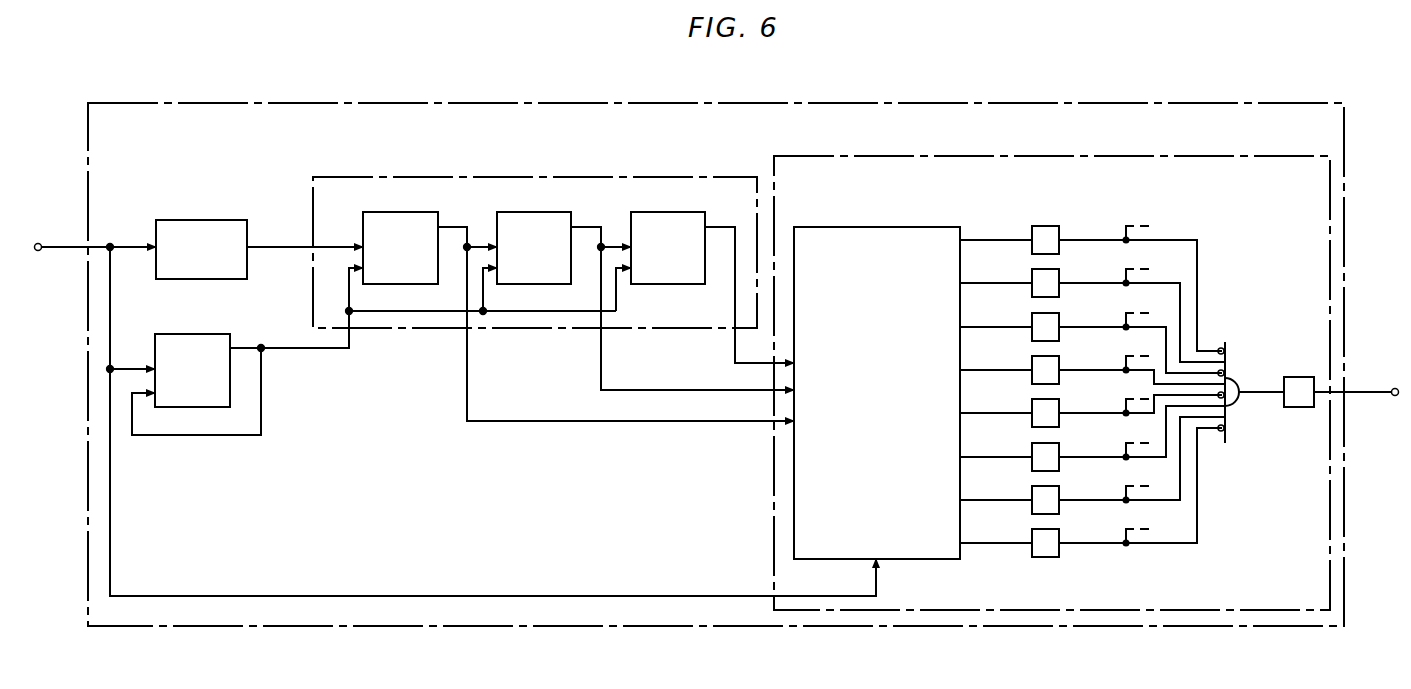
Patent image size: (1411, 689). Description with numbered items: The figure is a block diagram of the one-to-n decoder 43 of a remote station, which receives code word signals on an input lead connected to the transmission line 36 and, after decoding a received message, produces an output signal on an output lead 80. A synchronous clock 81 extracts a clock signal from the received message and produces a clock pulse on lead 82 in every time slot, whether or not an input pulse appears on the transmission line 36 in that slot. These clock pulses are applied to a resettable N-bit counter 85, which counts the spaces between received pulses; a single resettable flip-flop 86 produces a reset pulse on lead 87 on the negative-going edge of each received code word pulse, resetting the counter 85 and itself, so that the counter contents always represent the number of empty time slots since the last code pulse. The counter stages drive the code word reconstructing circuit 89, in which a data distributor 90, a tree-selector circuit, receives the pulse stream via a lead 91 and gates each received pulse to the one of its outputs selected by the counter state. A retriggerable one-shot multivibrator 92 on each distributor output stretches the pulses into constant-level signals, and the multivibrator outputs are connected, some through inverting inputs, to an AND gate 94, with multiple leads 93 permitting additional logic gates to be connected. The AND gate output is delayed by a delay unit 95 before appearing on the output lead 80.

The decoder 43 is at (907, 103).
The transmission line 36 is at (60, 247).
The synchronous clock 81 is at (191, 220).
The lead 82 is at (279, 247).
The resettable N bit counter 85 is at (540, 177).
The resettable flip-flop 86 is at (188, 334).
The lead 87 is at (314, 348).
The code word reconstructing circuit 89 is at (1150, 156).
The data distributor 90 is at (872, 227).
The lead 91 is at (569, 596).
The retriggerable one-shot multivibrator 92 is at (1032, 270).
The multiple leads 93 is at (1132, 224).
The AND gate 94 is at (1238, 373).
The delay unit 95 is at (1299, 377).
The output lead 80 is at (1370, 392).